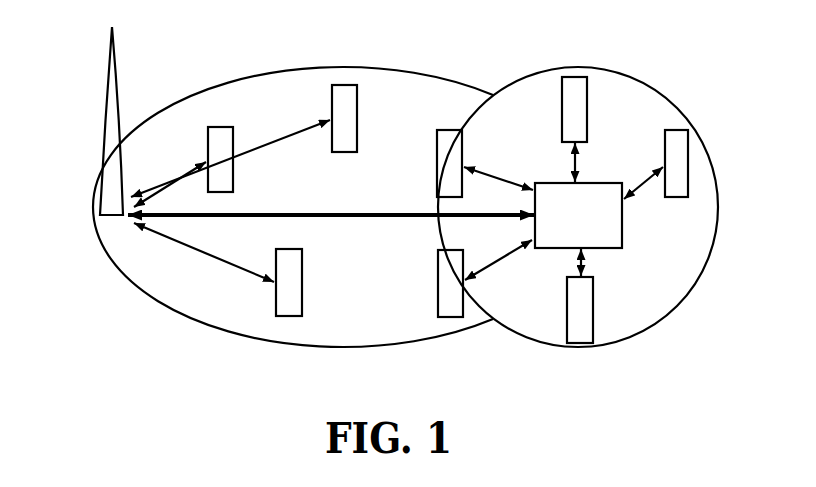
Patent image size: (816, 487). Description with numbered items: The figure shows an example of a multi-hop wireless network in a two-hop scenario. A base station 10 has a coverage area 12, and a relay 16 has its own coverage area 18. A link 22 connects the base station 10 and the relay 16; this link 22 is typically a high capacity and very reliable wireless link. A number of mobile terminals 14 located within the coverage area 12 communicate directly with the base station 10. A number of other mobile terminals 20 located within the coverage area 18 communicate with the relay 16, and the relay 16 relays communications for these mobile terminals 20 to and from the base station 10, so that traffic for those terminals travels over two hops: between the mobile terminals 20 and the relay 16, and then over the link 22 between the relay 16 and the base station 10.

The base station 10 is at (103, 132).
The coverage area 12 is at (257, 73).
The mobile terminals 14 is at (360, 97).
The relay 16 is at (565, 240).
The coverage area 18 is at (663, 92).
The mobile terminals 20 is at (587, 102).
The link 22 is at (363, 211).